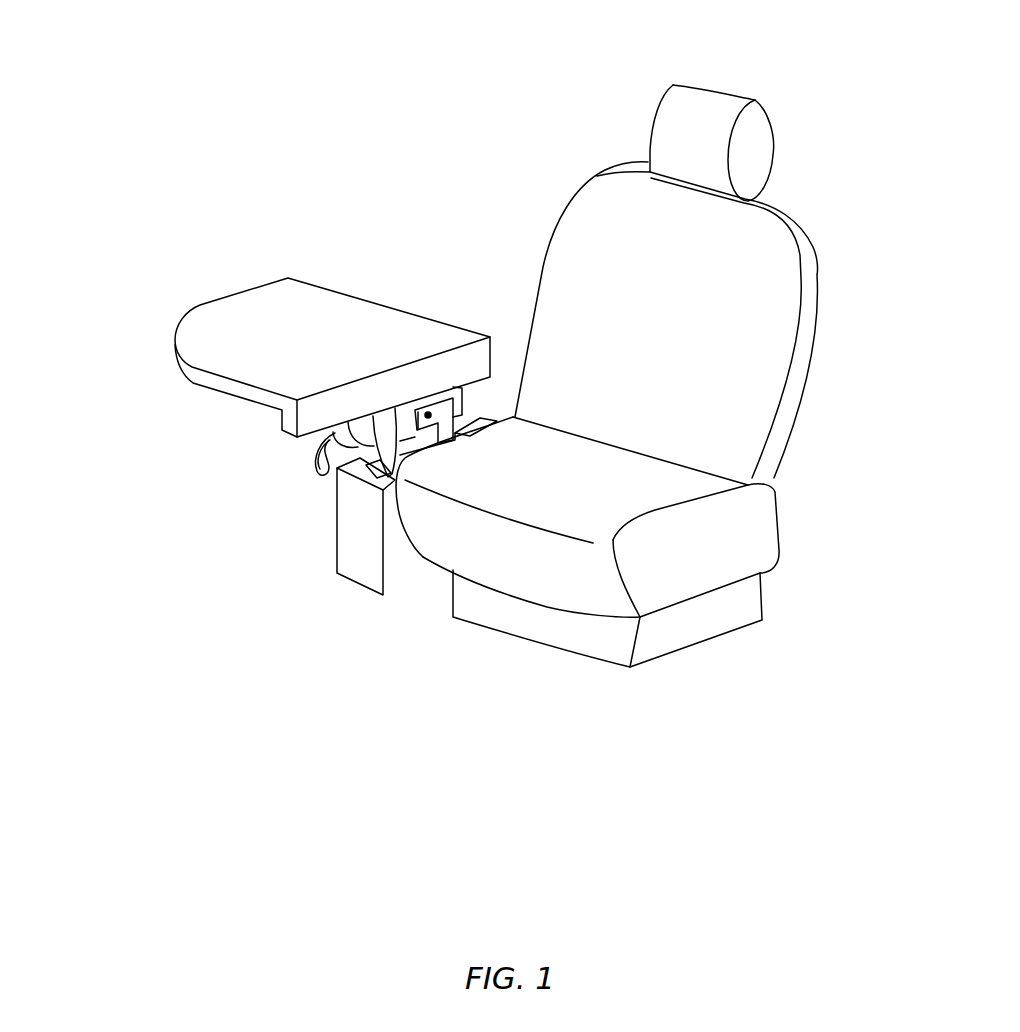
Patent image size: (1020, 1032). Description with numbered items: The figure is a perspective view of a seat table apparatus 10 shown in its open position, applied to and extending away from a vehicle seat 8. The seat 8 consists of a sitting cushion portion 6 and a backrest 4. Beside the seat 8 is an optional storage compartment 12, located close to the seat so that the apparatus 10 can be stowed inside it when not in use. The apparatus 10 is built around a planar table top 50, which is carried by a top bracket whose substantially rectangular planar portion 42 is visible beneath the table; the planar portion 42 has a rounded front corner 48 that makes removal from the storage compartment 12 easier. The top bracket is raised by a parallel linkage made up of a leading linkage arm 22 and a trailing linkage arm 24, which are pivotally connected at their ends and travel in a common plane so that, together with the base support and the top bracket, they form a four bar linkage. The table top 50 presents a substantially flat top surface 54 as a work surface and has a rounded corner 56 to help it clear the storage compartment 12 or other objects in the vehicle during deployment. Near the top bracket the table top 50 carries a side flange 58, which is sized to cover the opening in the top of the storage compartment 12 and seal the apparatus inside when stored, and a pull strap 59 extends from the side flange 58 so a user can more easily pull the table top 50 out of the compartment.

The backrest 4 is at (763, 277).
The sitting cushion portion 6 is at (513, 562).
The seat 8 is at (709, 75).
The apparatus 10 is at (294, 339).
The storage compartment 12 is at (322, 545).
The leading linkage arm 22 is at (417, 406).
The trailing linkage arm 24 is at (437, 400).
The planar portion 42 is at (460, 402).
The rounded front corner 48 is at (336, 426).
The table top 50 is at (272, 338).
The top surface 54 is at (202, 335).
The rounded corner 56 is at (173, 358).
The side flange 58 is at (315, 415).
The pull strap 59 is at (313, 470).